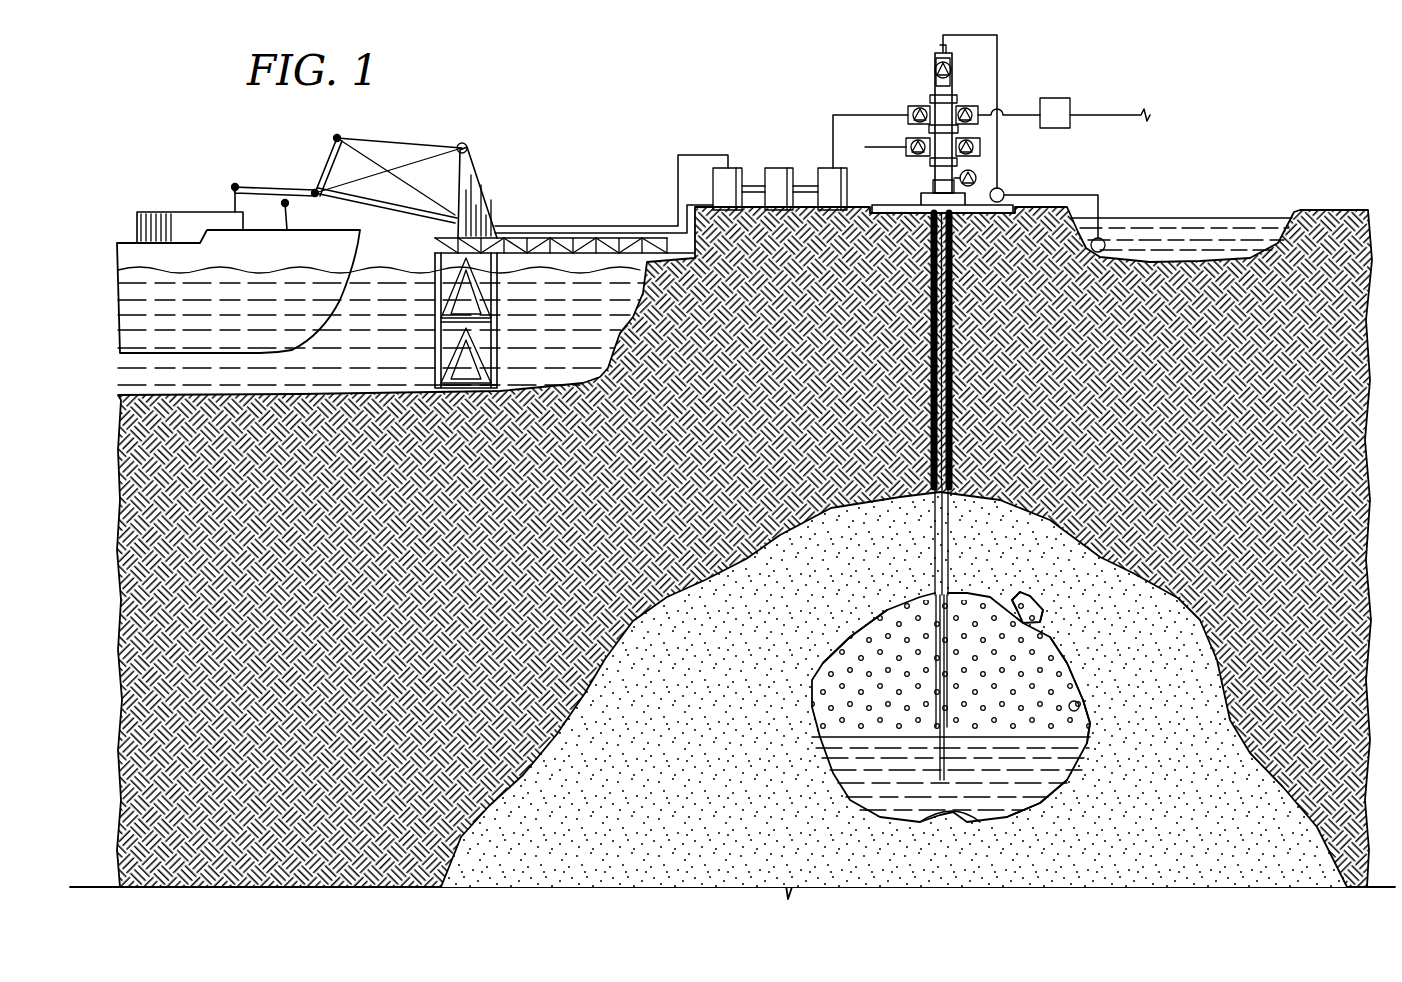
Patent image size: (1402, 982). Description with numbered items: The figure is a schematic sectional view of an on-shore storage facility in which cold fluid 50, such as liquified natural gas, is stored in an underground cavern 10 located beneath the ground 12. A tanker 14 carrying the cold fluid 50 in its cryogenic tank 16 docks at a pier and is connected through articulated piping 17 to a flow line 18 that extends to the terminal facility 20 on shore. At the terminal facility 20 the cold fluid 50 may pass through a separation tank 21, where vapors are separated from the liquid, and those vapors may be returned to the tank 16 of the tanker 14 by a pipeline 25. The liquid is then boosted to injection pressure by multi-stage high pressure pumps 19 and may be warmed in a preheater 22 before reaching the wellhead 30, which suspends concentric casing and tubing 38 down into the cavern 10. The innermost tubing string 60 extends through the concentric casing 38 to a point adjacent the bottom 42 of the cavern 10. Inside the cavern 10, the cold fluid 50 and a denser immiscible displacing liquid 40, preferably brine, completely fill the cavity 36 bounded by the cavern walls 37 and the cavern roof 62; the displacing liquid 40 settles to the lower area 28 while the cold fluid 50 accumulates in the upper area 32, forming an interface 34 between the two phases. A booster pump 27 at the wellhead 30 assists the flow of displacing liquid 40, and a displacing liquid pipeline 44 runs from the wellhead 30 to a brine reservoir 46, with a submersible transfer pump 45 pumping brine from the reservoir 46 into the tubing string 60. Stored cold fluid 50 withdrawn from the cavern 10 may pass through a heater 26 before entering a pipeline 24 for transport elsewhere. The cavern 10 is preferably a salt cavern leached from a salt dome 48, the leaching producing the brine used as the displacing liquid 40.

The underground cavern 10 is at (800, 678).
The ground 12 is at (1325, 210).
The tanker 14 is at (352, 252).
The cryogenic tank 16 is at (202, 208).
The articulated piping 17 is at (253, 183).
The flow line 18 is at (588, 232).
The multi-stage high pressure pumps 19 is at (780, 168).
The terminal facility 20 is at (700, 70).
The separation tank 21 is at (735, 168).
The preheater 22 is at (849, 180).
The pipeline 24 is at (833, 113).
The pipeline 25 is at (525, 225).
The heater 26 is at (1055, 98).
The booster pump 27 is at (1003, 189).
The lower area 28 is at (857, 780).
The wellhead 30 is at (924, 82).
The upper area 32 is at (1055, 668).
The interface 34 is at (903, 735).
The cavity 36 is at (1087, 722).
The cavern walls 37 is at (1080, 702).
The concentric casing and tubing 38 is at (956, 322).
The immiscible displacing liquid 40 is at (1032, 805).
The bottom 42 is at (925, 822).
The displacing liquid pipeline 44 is at (1090, 195).
The submersible transfer pump 45 is at (1091, 250).
The reservoir 46 is at (1193, 226).
The salt dome 48 is at (1178, 598).
The cold fluid 50 is at (850, 645).
The innermost tubing string 60 is at (950, 765).
The cavern roof 62 is at (1043, 628).